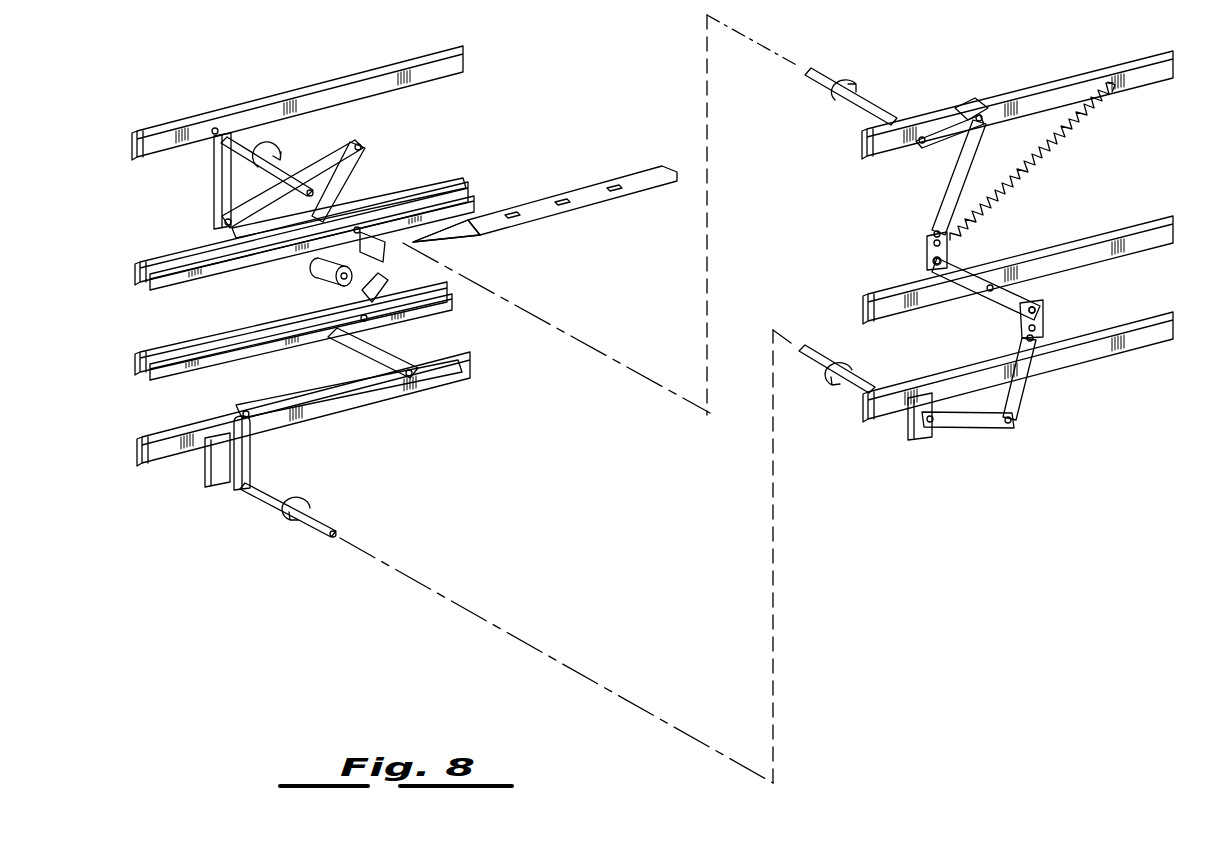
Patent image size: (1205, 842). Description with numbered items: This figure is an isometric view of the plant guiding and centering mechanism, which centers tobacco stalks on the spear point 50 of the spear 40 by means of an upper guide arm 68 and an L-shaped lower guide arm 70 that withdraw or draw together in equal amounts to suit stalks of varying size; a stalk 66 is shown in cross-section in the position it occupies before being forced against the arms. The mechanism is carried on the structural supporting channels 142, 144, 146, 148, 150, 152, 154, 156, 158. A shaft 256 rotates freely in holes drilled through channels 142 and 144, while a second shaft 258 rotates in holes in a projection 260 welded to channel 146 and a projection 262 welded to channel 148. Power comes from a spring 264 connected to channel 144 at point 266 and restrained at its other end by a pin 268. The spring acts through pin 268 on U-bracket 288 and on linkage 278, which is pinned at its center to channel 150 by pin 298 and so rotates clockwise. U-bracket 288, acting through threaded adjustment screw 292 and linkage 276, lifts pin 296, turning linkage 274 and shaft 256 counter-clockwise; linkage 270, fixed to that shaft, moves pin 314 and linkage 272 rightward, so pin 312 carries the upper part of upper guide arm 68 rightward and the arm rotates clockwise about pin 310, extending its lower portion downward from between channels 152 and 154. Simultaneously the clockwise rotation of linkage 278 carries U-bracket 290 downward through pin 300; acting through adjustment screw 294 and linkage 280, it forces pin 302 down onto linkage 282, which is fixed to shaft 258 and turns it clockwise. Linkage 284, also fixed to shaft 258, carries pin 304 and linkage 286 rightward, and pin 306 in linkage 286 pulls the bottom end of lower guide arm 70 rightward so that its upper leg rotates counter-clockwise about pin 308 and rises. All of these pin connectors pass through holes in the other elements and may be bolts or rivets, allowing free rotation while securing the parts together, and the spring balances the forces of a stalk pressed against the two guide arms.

The slat 40 is at (588, 185).
The spear point 50 is at (458, 240).
The stalk 66 is at (328, 280).
The upper guide arm 68 is at (350, 175).
The lower guide arm 70 is at (350, 352).
The channel 142 is at (373, 68).
The channel 144 is at (1070, 72).
The channel 146 is at (352, 410).
The channel 148 is at (1125, 355).
The channel 150 is at (1095, 237).
The channel 152 is at (140, 272).
The channel 154 is at (152, 288).
The channel 156 is at (140, 362).
The channel 158 is at (152, 378).
The shaft 256 is at (815, 78).
The second shaft 258 is at (806, 348).
The projection 260 is at (210, 482).
The projection 262 is at (918, 436).
The spring 264 is at (1050, 150).
The point 266 is at (1115, 85).
The pin 268 is at (930, 263).
The linkage 270 is at (214, 186).
The linkage 272 is at (305, 163).
The linkage 274 is at (932, 125).
The linkage 276 is at (945, 190).
The linkage 278 is at (1000, 310).
The linkage 280 is at (1015, 396).
The linkage 282 is at (973, 430).
The linkage 284 is at (252, 466).
The linkage 286 is at (280, 400).
The U-bracket 288 is at (927, 241).
The U-bracket 290 is at (1044, 320).
The threaded adjustment screw 292 is at (934, 232).
The threaded adjustment screw 294 is at (1024, 339).
The pin connector 296 is at (979, 114).
The pin connector 298 is at (990, 284).
The pin connector 300 is at (1044, 307).
The pin connector 302 is at (1015, 422).
The pin connector 304 is at (250, 418).
The pin connector 306 is at (412, 375).
The pin connector 308 is at (368, 320).
The pin connector 310 is at (360, 228).
The pin connector 312 is at (360, 146).
The pin connector 314 is at (226, 222).